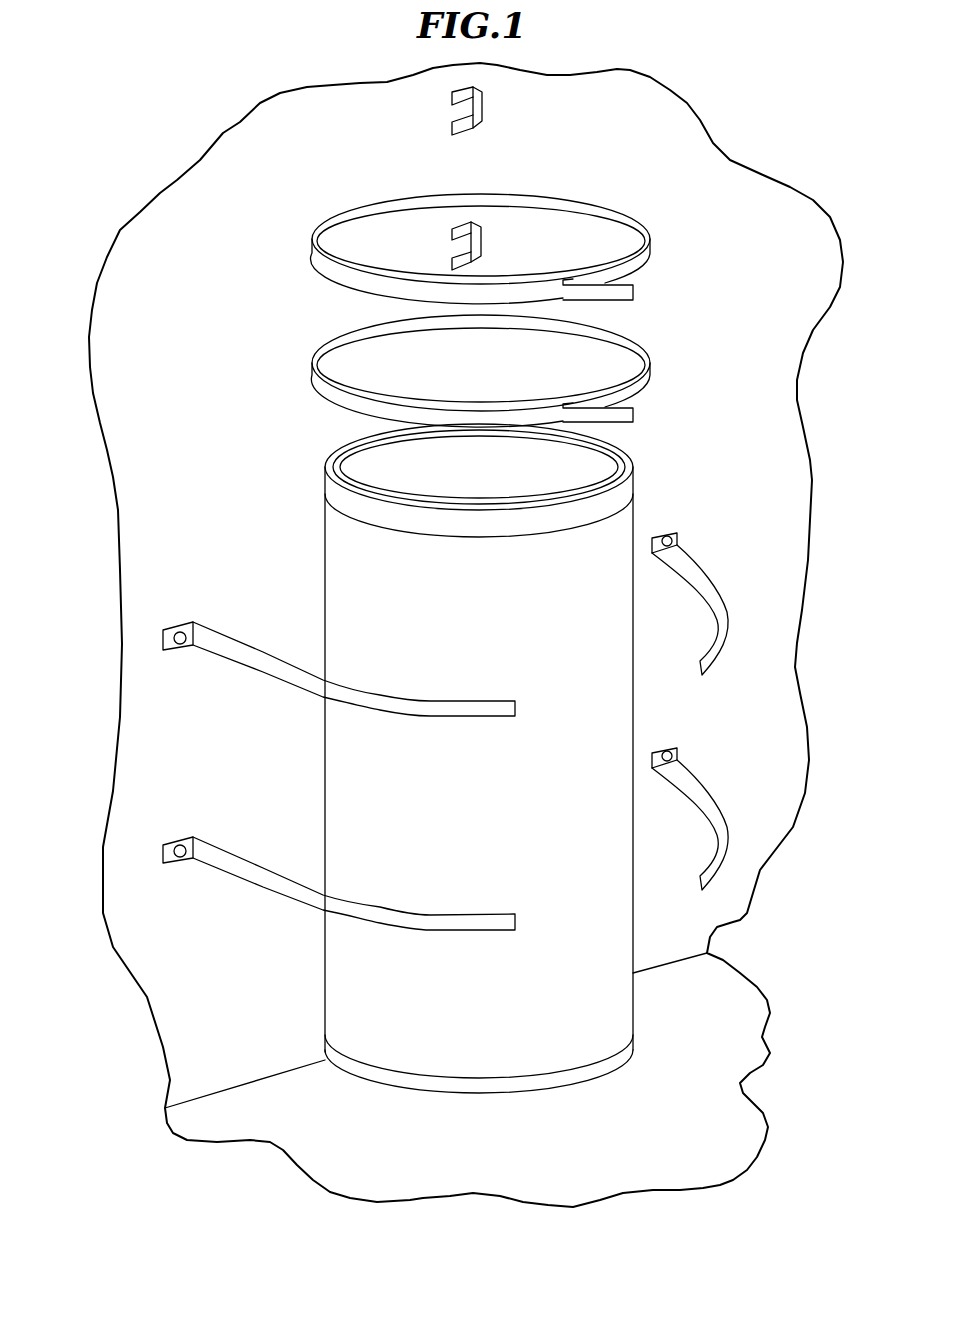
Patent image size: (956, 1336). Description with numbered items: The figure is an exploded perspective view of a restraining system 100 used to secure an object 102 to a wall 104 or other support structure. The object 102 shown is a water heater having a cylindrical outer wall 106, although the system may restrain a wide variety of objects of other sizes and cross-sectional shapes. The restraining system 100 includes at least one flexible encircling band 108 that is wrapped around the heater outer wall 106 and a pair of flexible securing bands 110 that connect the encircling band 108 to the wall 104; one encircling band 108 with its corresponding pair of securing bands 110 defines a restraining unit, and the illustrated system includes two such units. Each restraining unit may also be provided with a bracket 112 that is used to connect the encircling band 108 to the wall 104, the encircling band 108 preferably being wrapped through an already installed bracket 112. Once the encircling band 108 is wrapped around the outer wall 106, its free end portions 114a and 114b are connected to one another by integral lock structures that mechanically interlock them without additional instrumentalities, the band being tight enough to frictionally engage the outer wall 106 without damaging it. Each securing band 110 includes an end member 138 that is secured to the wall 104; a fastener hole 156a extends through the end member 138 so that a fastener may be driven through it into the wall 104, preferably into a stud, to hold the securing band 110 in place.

The restraining system 100 is at (278, 418).
The object 102 is at (388, 779).
The wall 104 is at (155, 743).
The cylindrical outer wall 106 is at (440, 1060).
The encircling band 108 is at (536, 280).
The securing band 110 is at (692, 565).
The bracket 112 is at (483, 118).
The free end portion 114a is at (583, 273).
The free end portion 114b is at (630, 313).
The end member 138 is at (167, 627).
The fastener hole 156a is at (182, 634).